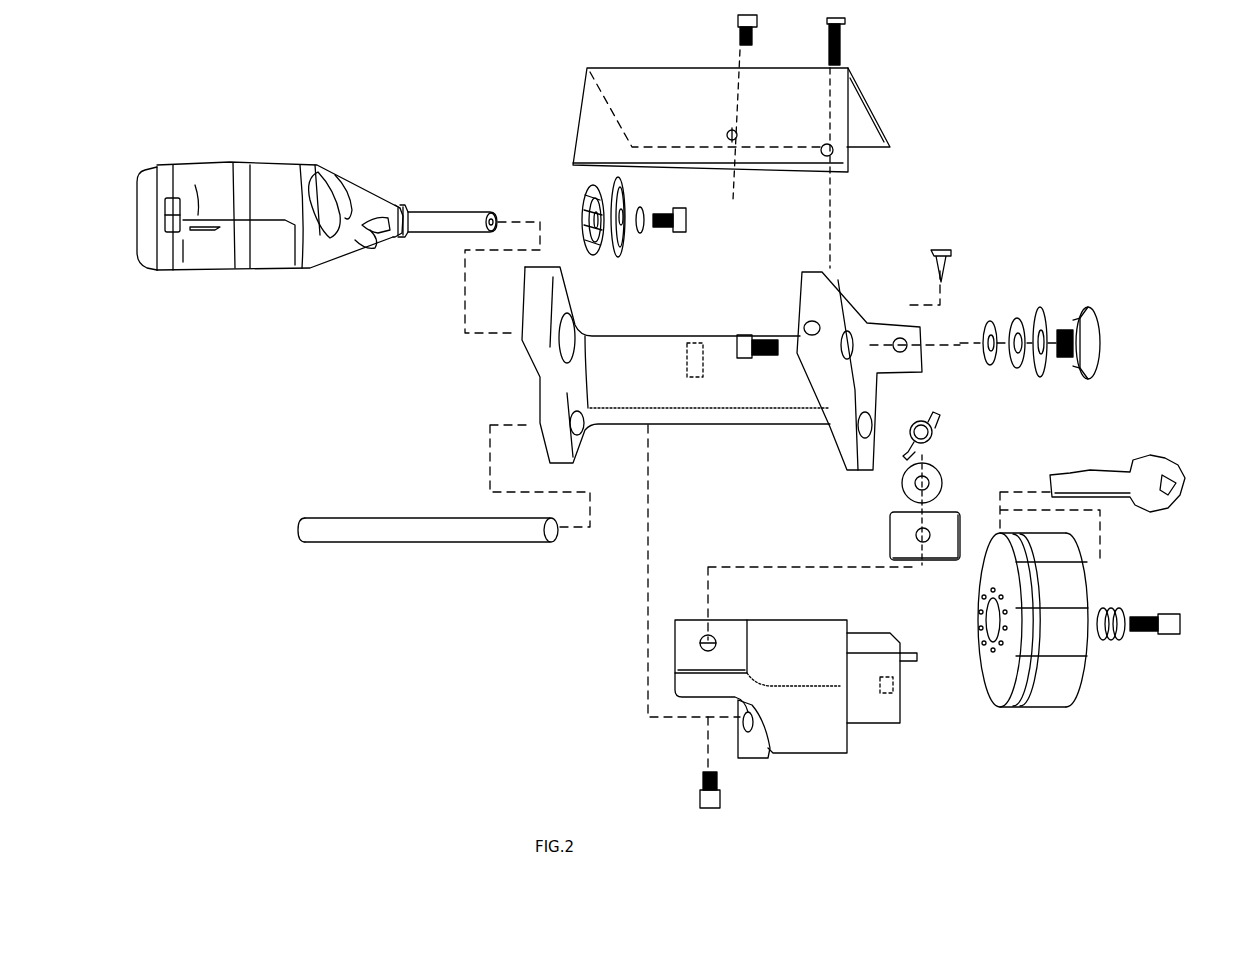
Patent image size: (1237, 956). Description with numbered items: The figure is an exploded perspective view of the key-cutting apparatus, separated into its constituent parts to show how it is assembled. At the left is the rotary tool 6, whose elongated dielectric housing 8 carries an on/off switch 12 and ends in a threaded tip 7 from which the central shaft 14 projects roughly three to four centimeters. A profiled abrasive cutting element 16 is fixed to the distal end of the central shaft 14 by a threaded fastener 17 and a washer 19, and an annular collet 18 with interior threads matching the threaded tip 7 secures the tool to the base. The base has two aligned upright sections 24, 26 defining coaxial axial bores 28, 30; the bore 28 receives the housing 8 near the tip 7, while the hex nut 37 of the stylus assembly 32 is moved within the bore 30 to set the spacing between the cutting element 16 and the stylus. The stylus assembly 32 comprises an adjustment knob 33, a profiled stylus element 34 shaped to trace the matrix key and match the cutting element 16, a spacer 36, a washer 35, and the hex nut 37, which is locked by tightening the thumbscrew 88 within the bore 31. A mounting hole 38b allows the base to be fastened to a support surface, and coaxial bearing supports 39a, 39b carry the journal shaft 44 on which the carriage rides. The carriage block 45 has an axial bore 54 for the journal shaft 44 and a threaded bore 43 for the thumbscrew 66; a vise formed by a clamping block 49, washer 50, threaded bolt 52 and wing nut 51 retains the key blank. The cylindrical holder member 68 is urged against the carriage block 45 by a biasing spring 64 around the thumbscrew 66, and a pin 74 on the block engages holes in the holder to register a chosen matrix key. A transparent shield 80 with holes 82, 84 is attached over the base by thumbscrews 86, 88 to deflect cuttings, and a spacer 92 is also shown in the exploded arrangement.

The rotary tool 6 is at (248, 300).
The threaded tip 7 is at (396, 205).
The dielectric housing 8 is at (270, 196).
The on/off switch 12 is at (178, 200).
The central shaft 14 is at (432, 218).
The abrasive cutting element 16 is at (622, 252).
The threaded fastener 17 is at (679, 208).
The annular collet 18 is at (593, 255).
The washer 19 is at (642, 230).
The upright section 24 is at (570, 383).
The upright section 26 is at (835, 312).
The axial bore 28 is at (562, 347).
The axial bore 30 is at (824, 391).
The bore 31 is at (818, 325).
The stylus assembly 32 is at (1083, 290).
The adjustment knob 33 is at (1096, 355).
The profiled stylus element 34 is at (1043, 377).
The washer 35 is at (990, 366).
The spacer 36 is at (1018, 369).
The hex nut 37 is at (742, 355).
The mounting hole 38b is at (898, 340).
The bearing support 39a is at (577, 432).
The bearing support 39b is at (862, 437).
The threaded bore 43 is at (893, 690).
The journal shaft 44 is at (347, 530).
The carriage block 45 is at (806, 720).
The clamping block 49 is at (900, 535).
The washer 50 is at (938, 478).
The wing nut 51 is at (935, 420).
The threaded bolt 52 is at (722, 800).
The axial bore 54 is at (750, 752).
The biasing spring 64 is at (1114, 608).
The thumbscrew 66 is at (1182, 618).
The cylindrical holder member 68 is at (1039, 599).
The pin 74 is at (907, 652).
The transparent shield 80 is at (868, 105).
The hole 82 is at (722, 133).
The hole 84 is at (833, 152).
The thumbscrew 86 is at (757, 35).
The thumbscrew 88 is at (845, 35).
The spacer 92 is at (700, 345).